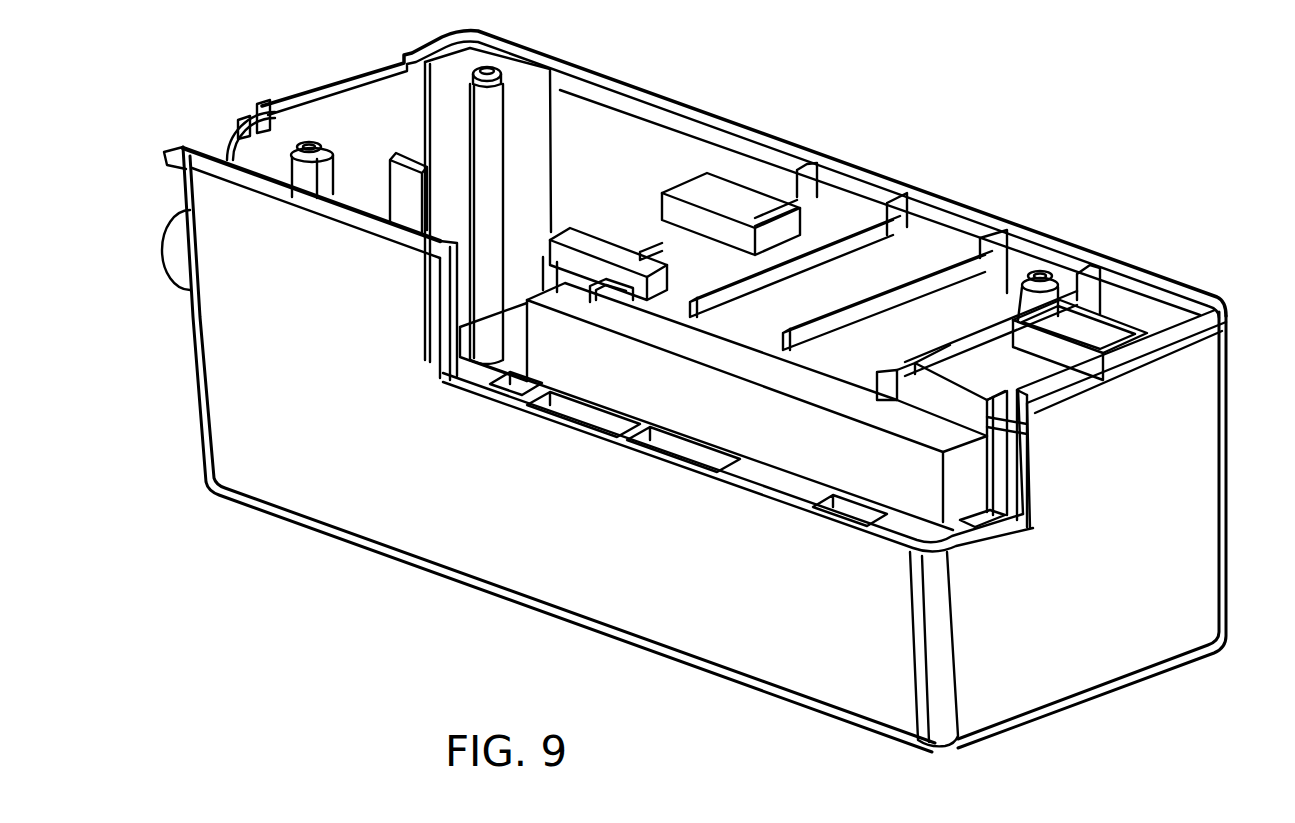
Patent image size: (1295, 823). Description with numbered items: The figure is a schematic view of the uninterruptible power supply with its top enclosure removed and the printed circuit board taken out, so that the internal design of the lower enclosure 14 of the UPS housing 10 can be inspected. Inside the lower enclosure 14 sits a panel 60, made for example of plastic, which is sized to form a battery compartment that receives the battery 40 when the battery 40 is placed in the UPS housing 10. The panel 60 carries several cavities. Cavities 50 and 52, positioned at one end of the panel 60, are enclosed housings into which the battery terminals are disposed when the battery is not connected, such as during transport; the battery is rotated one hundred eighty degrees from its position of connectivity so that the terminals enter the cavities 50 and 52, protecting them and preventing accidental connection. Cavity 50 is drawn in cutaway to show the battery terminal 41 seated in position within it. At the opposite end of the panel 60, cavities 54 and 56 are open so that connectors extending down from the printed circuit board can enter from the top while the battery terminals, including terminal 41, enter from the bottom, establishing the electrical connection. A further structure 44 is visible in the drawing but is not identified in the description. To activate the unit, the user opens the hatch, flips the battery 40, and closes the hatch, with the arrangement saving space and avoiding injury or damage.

The UPS housing 10 is at (1153, 179).
The lower enclosure 14 is at (345, 497).
The battery 40 is at (906, 479).
The battery terminal 41 is at (607, 300).
The guide channel 44 is at (993, 462).
The cavity 50 is at (591, 246).
The cavity 52 is at (729, 206).
The cavity 54 is at (939, 388).
The cavity 56 is at (1097, 332).
The panel 60 is at (886, 281).